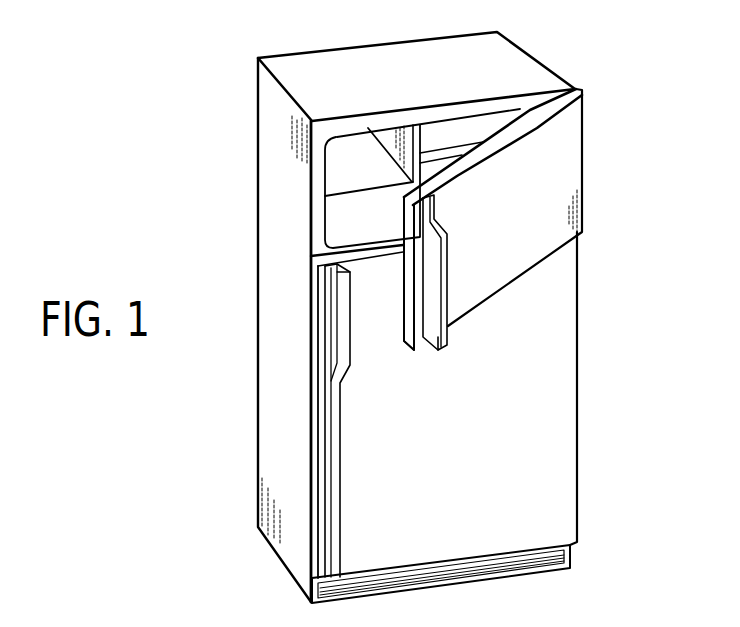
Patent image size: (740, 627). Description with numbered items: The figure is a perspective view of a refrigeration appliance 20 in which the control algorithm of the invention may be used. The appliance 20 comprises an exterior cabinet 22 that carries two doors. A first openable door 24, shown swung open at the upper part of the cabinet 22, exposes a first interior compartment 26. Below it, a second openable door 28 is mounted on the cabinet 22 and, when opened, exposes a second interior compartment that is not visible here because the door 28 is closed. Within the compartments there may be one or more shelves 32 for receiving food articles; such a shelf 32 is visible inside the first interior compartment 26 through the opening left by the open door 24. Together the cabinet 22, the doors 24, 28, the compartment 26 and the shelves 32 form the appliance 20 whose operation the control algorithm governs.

The refrigeration appliance 20 is at (583, 270).
The exterior cabinet 22 is at (289, 409).
The first openable door 24 is at (555, 176).
The first interior compartment 26 is at (437, 130).
The second openable door 28 is at (548, 426).
The shelves 32 is at (338, 198).